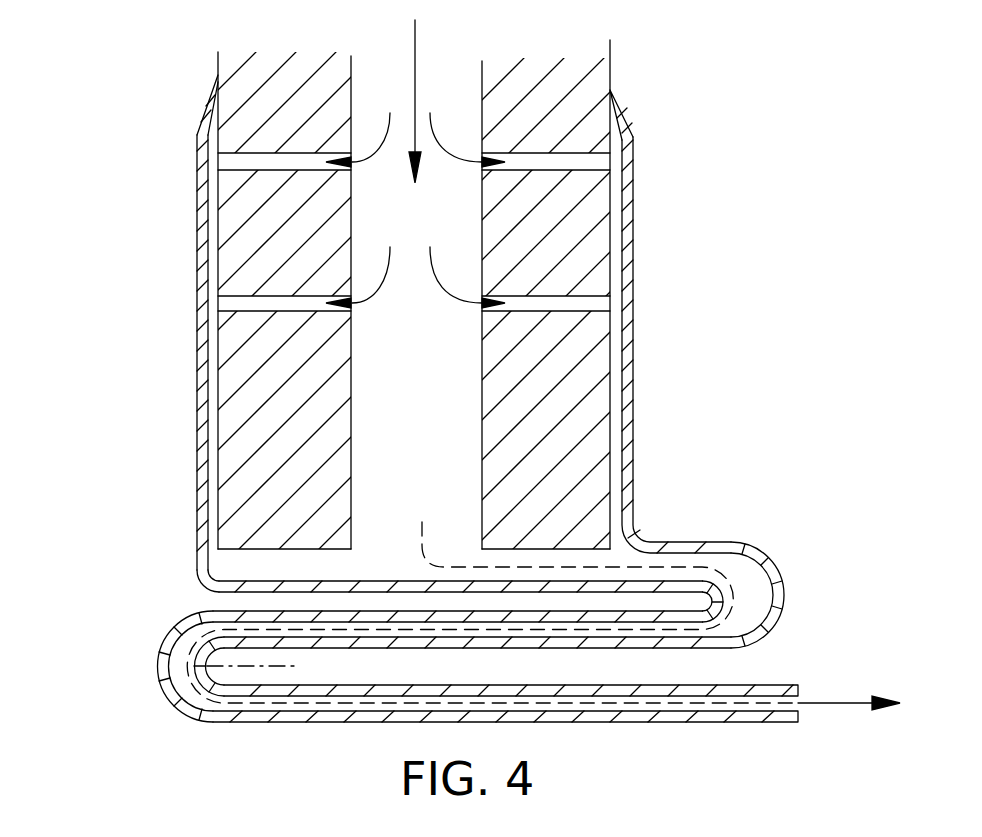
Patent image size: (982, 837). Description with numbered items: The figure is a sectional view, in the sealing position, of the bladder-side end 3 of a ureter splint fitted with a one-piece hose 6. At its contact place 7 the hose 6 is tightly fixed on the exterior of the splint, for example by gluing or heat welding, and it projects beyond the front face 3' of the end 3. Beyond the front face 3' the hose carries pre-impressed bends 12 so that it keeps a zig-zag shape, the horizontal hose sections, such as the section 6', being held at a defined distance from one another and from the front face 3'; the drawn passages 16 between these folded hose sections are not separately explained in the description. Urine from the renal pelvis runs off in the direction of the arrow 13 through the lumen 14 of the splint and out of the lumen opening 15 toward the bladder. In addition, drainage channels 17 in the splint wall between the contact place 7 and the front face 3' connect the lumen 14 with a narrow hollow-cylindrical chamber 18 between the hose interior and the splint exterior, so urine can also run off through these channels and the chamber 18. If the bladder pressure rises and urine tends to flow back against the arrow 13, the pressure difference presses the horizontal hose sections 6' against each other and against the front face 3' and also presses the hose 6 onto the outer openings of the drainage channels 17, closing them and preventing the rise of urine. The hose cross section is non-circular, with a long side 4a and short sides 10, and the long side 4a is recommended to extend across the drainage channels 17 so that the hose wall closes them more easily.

The end of the ureter splint oriented toward the bladder 3 is at (416, 294).
The front face of the ureter splint end 3' is at (201, 584).
The long side of the hose cross section 4a is at (155, 666).
The hose 6 is at (418, 363).
The horizontal hose section 6' is at (562, 359).
The contact place of the hose 7 is at (203, 110).
The short side of the hose cross section 10 is at (830, 703).
The pre-impressed bend 12 is at (205, 698).
The arrow indicating urine flow 13 is at (418, 45).
The lumen of the ureter splint 14 is at (402, 340).
The lumen opening 15 is at (375, 545).
The flow passage 16 is at (690, 567).
The drainage channel 17 is at (230, 162).
The hollow-cylindrical chamber 18 is at (212, 420).